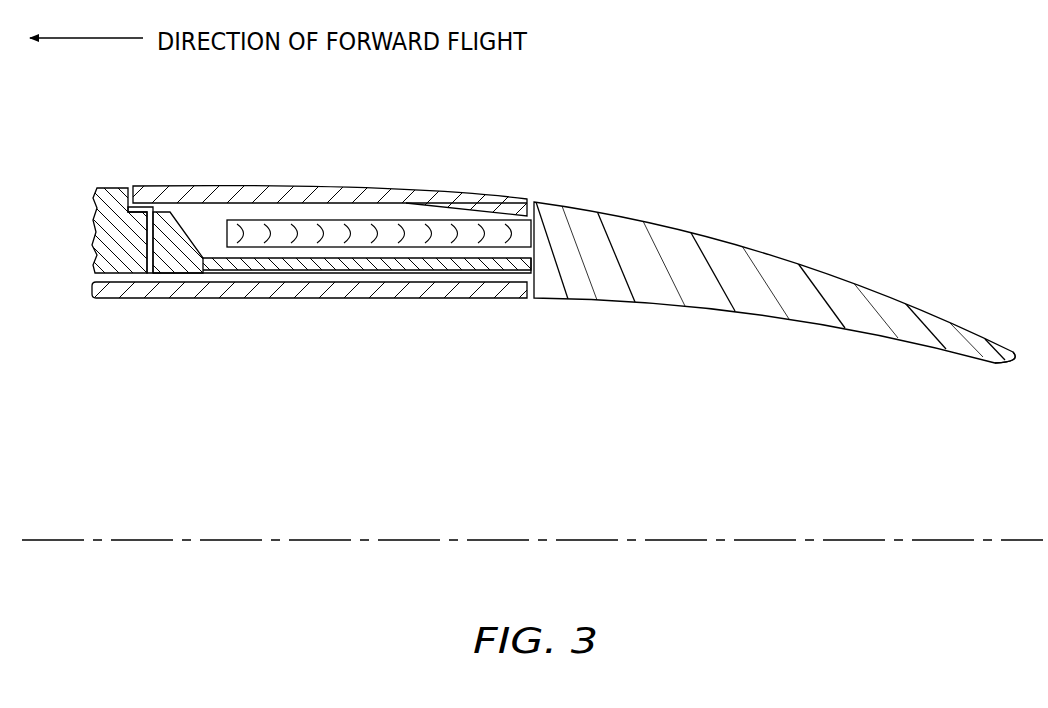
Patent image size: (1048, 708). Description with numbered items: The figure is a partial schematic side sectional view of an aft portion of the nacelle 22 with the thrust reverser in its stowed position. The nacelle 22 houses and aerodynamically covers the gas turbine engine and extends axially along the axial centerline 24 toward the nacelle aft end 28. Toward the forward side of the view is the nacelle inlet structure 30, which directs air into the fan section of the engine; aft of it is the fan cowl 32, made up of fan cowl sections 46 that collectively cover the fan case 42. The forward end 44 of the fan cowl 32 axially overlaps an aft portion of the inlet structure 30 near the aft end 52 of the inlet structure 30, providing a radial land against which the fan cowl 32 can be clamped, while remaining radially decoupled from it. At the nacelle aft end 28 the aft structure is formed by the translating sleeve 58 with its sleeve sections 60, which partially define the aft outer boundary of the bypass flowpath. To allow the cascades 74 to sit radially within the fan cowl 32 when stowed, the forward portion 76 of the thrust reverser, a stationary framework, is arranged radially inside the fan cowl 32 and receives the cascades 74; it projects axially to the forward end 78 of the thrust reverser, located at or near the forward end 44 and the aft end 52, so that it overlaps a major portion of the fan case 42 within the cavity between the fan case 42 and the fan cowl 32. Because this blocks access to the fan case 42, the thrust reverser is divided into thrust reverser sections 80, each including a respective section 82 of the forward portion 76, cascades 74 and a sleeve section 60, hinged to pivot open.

The nacelle 22 is at (773, 110).
The axial centerline 24 is at (1014, 543).
The nacelle aft end 28 is at (1018, 362).
The nacelle inlet structure 30 is at (101, 180).
The fan cowl 32 is at (263, 183).
The fan case 42 is at (122, 302).
The forward end of the fan cowl 44 is at (129, 188).
The fan cowl section 46 is at (318, 185).
The aft end of the inlet structure 52 is at (148, 213).
The translating sleeve 58 is at (812, 256).
The sleeve section 60 is at (873, 290).
The cascades 74 is at (404, 216).
The forward portion of the thrust reverser 76 is at (248, 278).
The forward end of the thrust reverser 78 is at (128, 244).
The thrust reverser section 80 is at (358, 278).
The section of the forward portion 82 is at (402, 275).